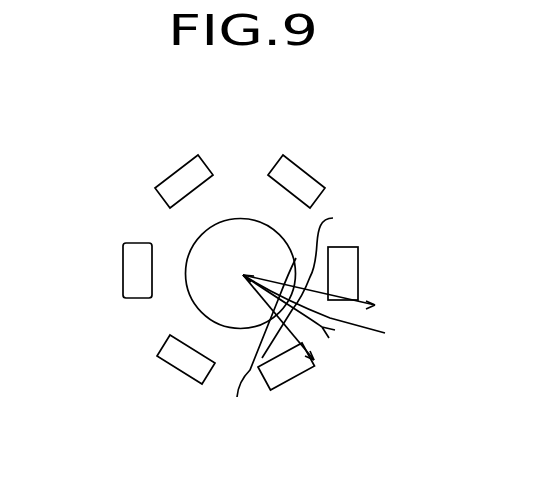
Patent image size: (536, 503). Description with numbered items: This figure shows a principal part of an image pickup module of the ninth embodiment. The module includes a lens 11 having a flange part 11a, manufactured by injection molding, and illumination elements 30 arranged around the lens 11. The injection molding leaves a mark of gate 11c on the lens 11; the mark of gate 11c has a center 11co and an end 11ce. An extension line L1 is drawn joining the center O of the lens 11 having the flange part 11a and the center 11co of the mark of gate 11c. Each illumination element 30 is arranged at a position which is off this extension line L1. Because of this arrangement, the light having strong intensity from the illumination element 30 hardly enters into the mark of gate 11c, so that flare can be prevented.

The illumination element 30 is at (176, 178).
The lens 11 is at (227, 296).
The flange part 11a is at (270, 228).
The mark of gate 11c is at (276, 319).
The end of the mark of gate 11ce is at (333, 218).
The center of the mark of gate 11co is at (385, 333).
The center of the lens O is at (291, 300).
The extension line L1 is at (322, 327).